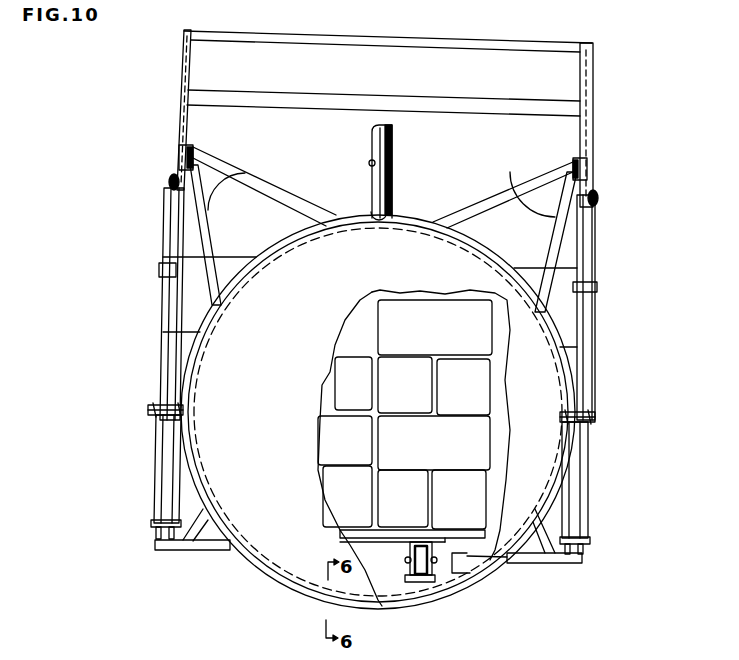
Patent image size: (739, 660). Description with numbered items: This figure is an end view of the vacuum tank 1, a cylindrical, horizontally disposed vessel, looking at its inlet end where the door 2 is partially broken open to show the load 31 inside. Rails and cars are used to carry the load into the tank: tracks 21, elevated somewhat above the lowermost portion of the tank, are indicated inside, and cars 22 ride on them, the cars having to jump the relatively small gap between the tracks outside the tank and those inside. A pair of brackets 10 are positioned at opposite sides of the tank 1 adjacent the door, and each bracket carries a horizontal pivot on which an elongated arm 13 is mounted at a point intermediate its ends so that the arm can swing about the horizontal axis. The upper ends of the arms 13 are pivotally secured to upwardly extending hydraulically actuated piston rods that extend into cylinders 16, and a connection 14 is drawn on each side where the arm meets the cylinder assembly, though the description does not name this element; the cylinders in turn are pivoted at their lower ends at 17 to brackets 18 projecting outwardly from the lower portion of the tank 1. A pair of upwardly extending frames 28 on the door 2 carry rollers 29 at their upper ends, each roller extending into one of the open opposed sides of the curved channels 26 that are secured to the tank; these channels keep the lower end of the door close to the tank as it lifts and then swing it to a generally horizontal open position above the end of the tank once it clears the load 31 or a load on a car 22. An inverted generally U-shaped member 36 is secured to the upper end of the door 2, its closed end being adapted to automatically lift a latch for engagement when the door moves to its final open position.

The vacuum tank 1 is at (482, 242).
The door 2 is at (268, 382).
The brackets 10 is at (212, 312).
The elongated arm 13 is at (166, 234).
The coupling flange 14 is at (155, 405).
The cylinders 16 is at (162, 457).
The pivot 17 is at (157, 537).
The brackets 18 is at (192, 551).
The tracks 21 is at (430, 575).
The cars 22 is at (393, 538).
The channels 26 is at (180, 123).
The frames 28 is at (243, 182).
The rollers 29 is at (180, 157).
The load 31 is at (448, 342).
The inverted generally U-shaped member 36 is at (393, 220).